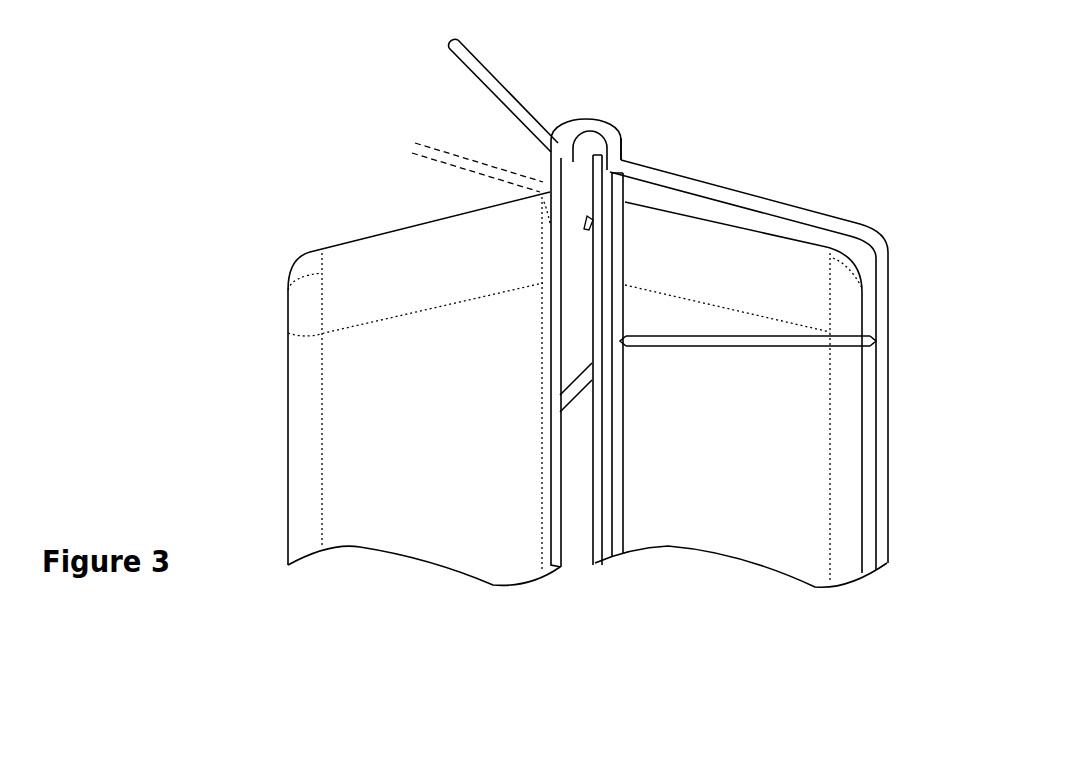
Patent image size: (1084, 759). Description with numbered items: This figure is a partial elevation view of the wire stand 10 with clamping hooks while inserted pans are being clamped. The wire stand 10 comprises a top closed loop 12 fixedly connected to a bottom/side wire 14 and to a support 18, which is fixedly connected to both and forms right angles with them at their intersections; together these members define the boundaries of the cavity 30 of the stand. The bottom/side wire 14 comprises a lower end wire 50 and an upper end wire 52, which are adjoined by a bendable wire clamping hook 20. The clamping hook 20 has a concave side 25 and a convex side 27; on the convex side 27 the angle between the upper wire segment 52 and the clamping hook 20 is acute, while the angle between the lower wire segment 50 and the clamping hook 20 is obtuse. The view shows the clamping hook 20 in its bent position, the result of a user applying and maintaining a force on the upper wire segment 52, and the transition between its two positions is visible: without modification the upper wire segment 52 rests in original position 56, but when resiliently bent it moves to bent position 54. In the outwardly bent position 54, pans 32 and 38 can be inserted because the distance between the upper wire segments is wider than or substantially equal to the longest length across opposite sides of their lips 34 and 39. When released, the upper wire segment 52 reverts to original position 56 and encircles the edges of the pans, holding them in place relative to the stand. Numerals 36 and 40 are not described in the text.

The wire stand 10 is at (885, 512).
The top closed loop 12 is at (620, 533).
The bottom/side wire 14 is at (885, 347).
The support 18 is at (845, 340).
The clamping hook 20 is at (600, 122).
The concave side 25 is at (573, 127).
The convex side 27 is at (617, 135).
The cavity 30 is at (868, 455).
The pan 32 is at (857, 425).
The lip 34 is at (597, 560).
The hinge plate 36 is at (593, 535).
The pan 38 is at (312, 258).
The lip 39 is at (557, 565).
The hinge plate 40 is at (560, 512).
The lower end wire 50 is at (800, 207).
The upper end wire 52 is at (456, 40).
The bent position 54 is at (477, 75).
The original position 56 is at (437, 145).